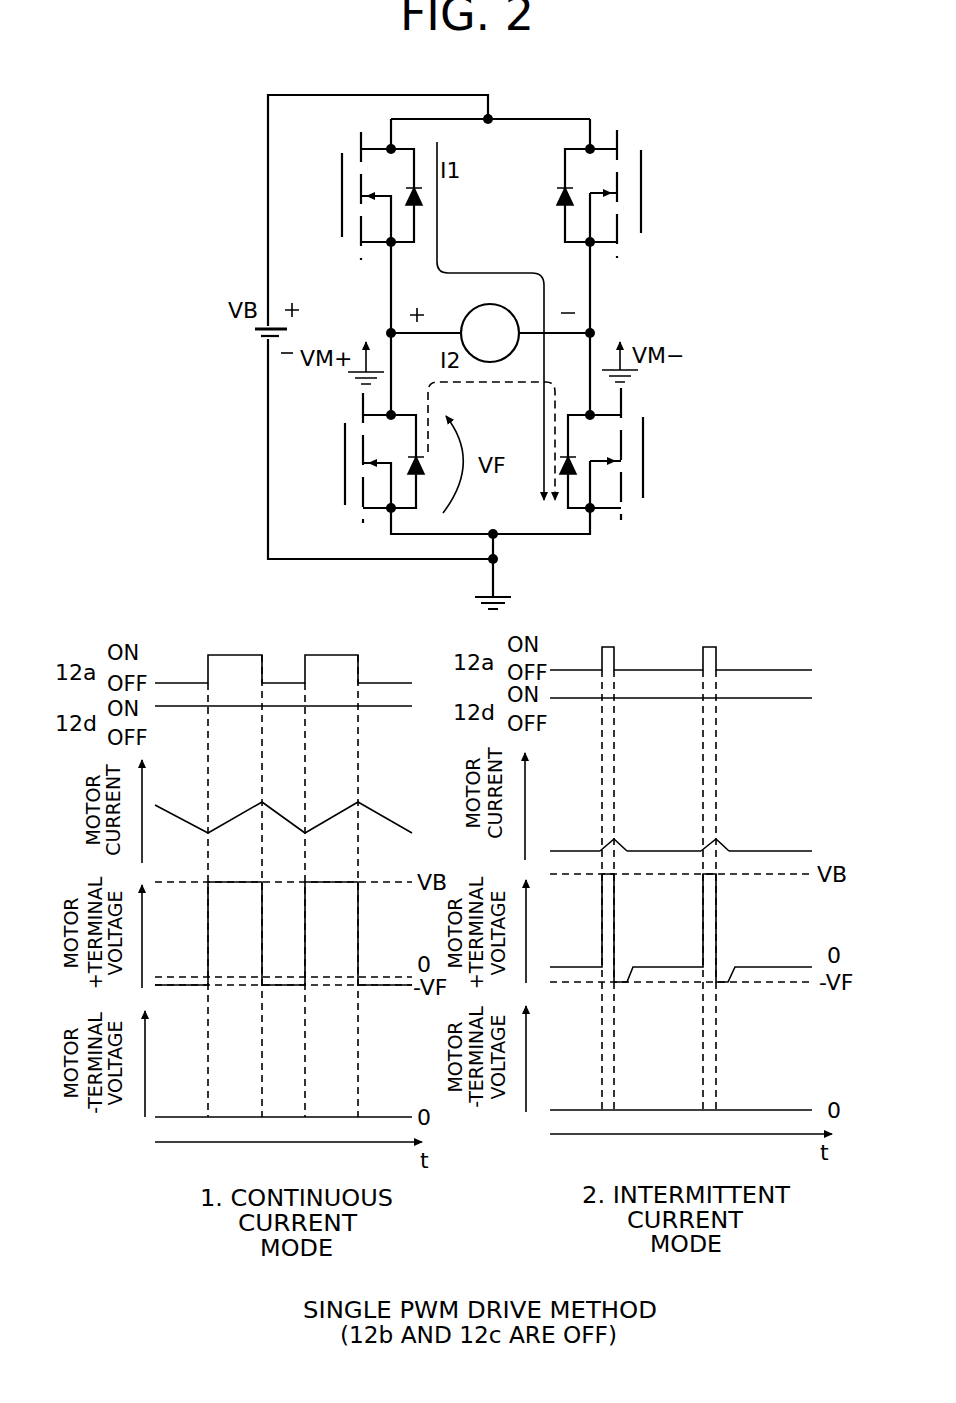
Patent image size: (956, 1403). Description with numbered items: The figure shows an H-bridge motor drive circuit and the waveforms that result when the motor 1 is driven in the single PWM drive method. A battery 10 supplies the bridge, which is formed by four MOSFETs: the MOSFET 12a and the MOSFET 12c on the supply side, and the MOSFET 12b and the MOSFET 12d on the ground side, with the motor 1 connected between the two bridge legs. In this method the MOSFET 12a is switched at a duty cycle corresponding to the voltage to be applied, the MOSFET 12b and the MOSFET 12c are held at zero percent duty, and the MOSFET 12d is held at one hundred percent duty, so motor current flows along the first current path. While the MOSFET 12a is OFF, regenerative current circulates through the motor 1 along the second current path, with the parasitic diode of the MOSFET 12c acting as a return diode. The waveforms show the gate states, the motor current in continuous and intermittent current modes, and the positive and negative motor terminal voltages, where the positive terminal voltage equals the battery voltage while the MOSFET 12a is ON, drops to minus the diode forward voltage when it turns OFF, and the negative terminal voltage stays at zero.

The motor 1 is at (463, 310).
The battery 10 is at (263, 339).
The MOSFET 12a is at (336, 228).
The MOSFET 12b is at (339, 494).
The MOSFET 12c is at (651, 208).
The MOSFET 12d is at (650, 486).